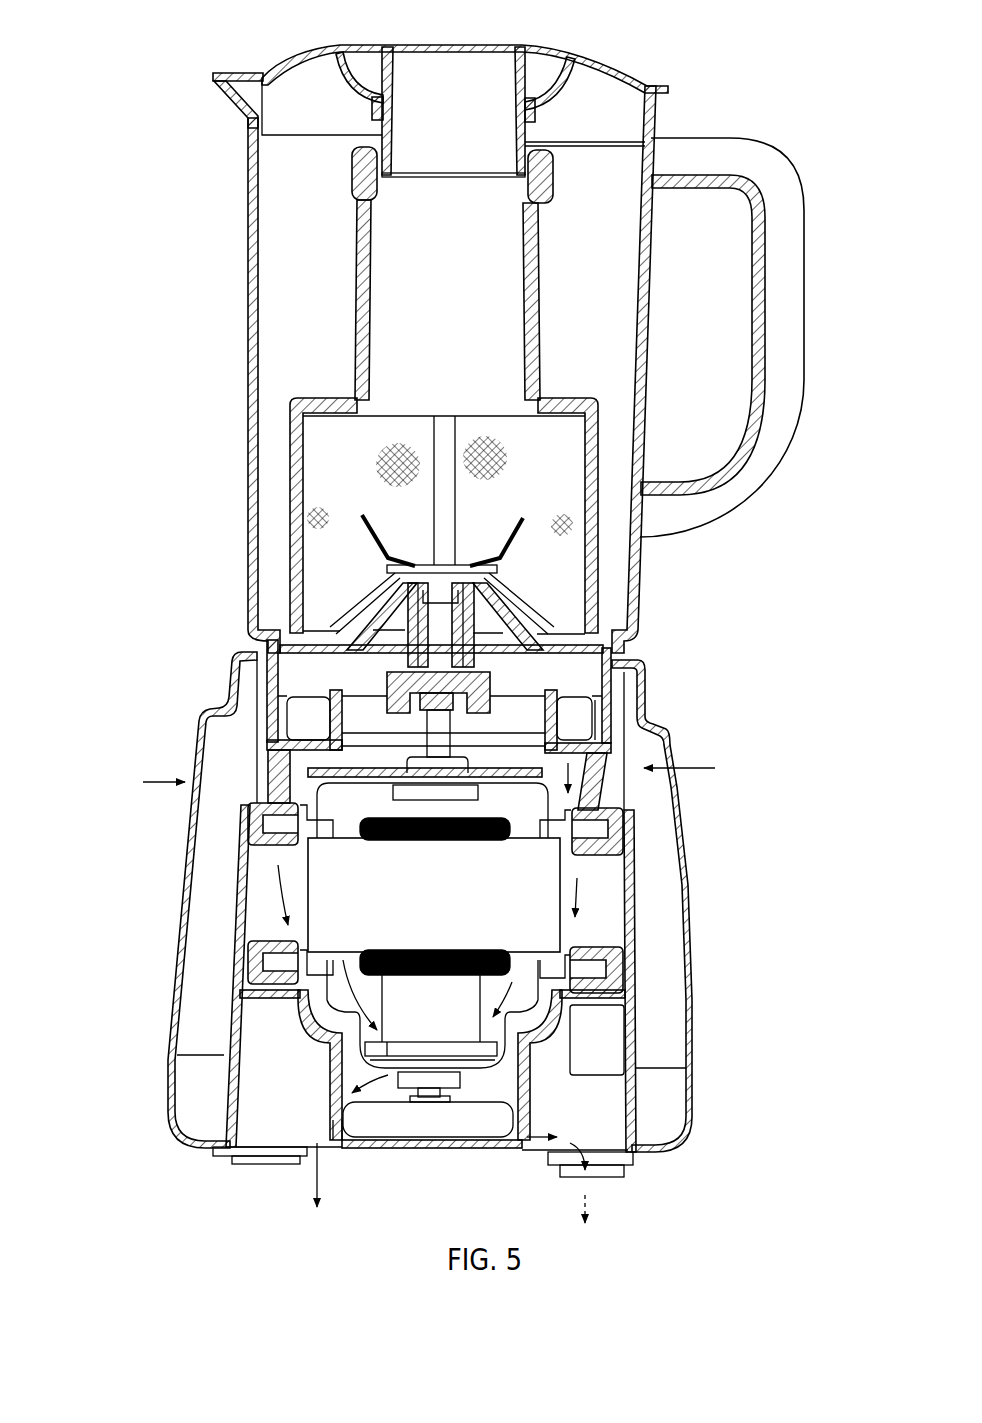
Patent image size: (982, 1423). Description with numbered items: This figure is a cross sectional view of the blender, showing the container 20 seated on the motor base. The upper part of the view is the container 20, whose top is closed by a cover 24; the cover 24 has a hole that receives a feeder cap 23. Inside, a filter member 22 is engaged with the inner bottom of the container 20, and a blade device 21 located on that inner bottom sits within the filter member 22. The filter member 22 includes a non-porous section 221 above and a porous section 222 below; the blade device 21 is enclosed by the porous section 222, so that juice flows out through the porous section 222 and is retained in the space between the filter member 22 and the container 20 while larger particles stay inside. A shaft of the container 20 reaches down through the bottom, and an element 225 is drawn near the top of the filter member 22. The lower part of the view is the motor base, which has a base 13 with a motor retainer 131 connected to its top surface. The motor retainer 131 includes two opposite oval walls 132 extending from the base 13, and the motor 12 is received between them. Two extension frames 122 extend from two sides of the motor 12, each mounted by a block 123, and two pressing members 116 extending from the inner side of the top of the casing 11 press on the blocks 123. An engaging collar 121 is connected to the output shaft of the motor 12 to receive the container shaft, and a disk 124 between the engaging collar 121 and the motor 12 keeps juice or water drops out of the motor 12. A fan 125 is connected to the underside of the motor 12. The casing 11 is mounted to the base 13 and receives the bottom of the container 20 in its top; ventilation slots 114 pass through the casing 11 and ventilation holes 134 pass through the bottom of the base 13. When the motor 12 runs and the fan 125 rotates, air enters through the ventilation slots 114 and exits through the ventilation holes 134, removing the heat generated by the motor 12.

The casing 11 is at (437, 918).
The ventilation slots 114 is at (197, 757).
The pressing members 116 is at (257, 797).
The motor 12 is at (330, 863).
The engaging collar 121 is at (497, 727).
The extension frames 122 is at (277, 822).
The block 123 is at (282, 830).
The disk 124 is at (607, 773).
The fan 125 is at (430, 1120).
The motor retainer 131 is at (629, 946).
The oval walls 132 is at (533, 1027).
The ventilation holes 134 is at (332, 1133).
The base 13 is at (675, 1146).
The container 20 is at (249, 300).
The blade device 21 is at (518, 537).
The filter member 22 is at (344, 386).
The non-porous section 221 is at (355, 300).
The porous section 222 is at (302, 520).
The mounting pad of inner container 225 is at (350, 172).
The feeder cap 23 is at (391, 88).
The cover 24 is at (278, 61).